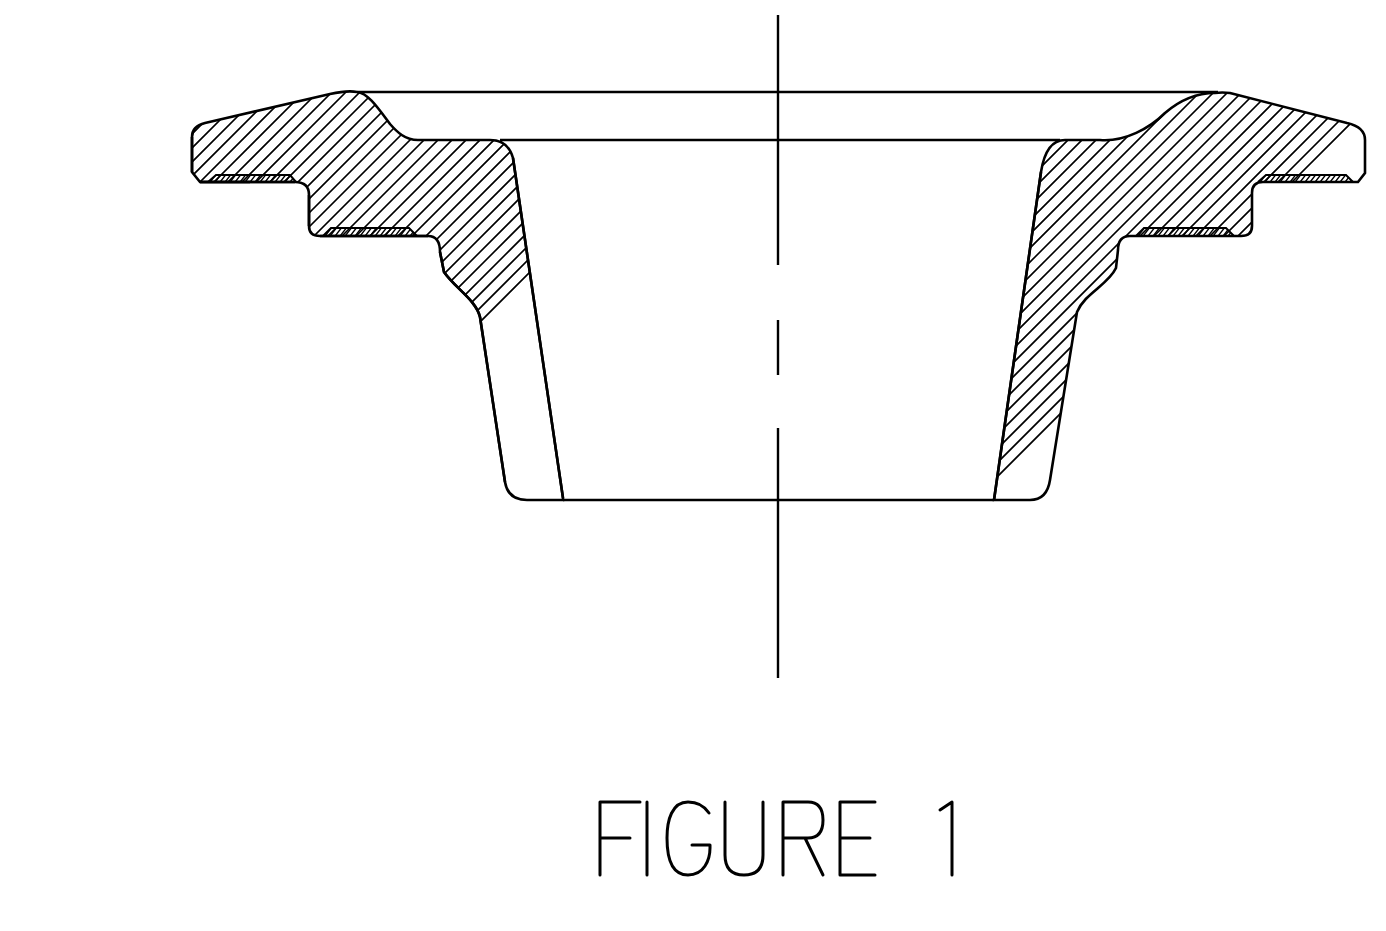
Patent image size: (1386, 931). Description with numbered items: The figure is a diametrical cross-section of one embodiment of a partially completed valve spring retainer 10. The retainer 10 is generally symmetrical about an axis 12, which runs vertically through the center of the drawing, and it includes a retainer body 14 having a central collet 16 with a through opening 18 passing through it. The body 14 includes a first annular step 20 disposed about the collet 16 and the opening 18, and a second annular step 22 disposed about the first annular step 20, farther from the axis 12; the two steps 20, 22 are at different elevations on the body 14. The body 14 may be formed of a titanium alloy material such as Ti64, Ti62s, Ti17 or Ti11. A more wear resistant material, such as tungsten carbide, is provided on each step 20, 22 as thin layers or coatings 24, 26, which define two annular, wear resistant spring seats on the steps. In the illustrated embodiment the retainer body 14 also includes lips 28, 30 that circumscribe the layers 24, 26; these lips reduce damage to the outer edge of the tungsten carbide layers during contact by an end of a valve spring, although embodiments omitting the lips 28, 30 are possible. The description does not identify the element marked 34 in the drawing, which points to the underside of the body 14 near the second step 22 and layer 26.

The valve spring retainer 10 is at (1253, 214).
The axis 12 is at (778, 652).
The retainer body 14 is at (472, 305).
The central collet 16 is at (517, 435).
The through opening 18 is at (558, 457).
The first annular step 20 is at (340, 218).
The second annular step 22 is at (268, 170).
The layer 24 is at (347, 238).
The layer 26 is at (218, 184).
The lip 28 is at (318, 238).
The lip 30 is at (202, 184).
The outer flange 34 is at (245, 184).